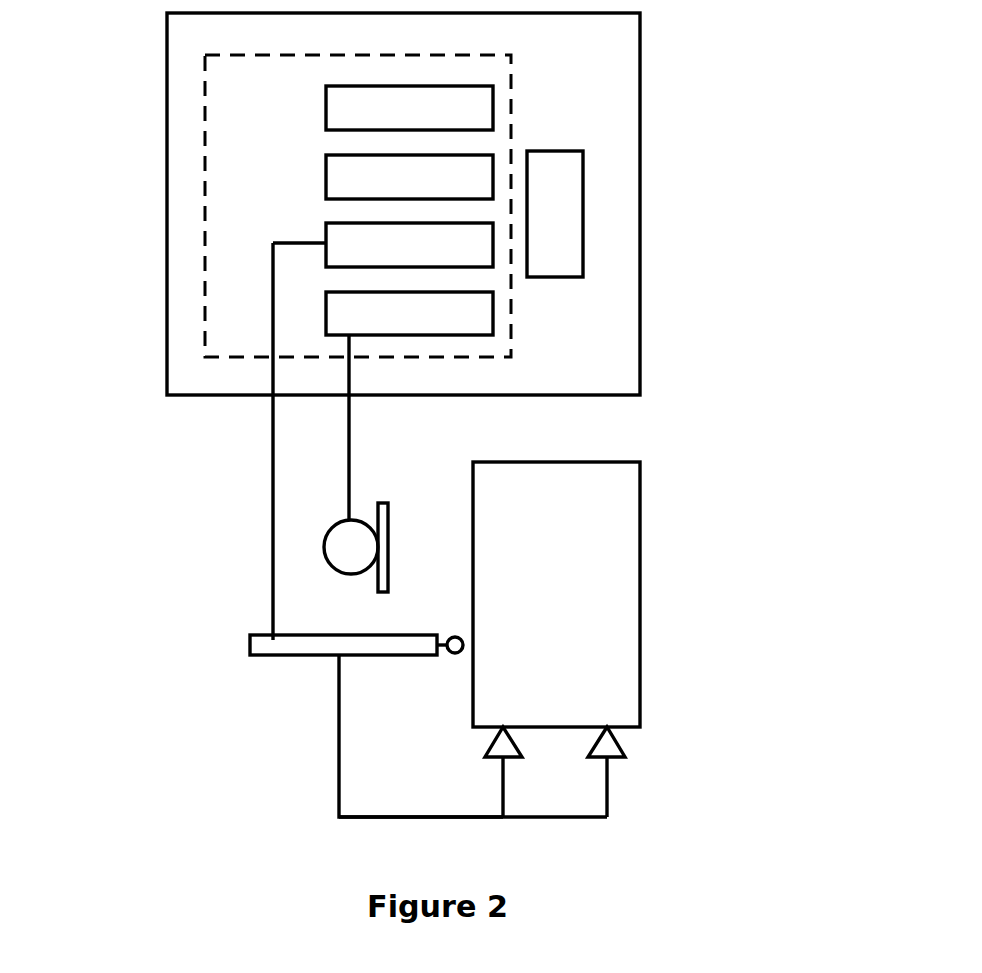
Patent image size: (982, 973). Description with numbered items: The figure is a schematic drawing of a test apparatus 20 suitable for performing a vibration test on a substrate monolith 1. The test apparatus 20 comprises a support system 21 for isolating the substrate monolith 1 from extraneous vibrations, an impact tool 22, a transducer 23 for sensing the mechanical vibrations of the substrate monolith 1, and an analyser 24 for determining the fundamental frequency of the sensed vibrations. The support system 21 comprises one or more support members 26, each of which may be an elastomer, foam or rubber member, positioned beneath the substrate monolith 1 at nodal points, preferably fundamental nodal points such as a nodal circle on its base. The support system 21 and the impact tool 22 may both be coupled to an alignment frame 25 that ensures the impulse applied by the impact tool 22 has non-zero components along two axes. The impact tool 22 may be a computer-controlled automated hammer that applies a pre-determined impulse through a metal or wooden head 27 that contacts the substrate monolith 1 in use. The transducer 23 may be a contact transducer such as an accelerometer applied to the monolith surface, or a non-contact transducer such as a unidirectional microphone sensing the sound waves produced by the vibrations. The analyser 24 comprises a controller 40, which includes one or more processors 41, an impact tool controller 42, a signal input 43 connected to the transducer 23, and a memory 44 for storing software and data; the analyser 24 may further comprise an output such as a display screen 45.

The substrate monolith 1 is at (607, 570).
The test apparatus 20 is at (192, 547).
The support system 21 is at (648, 748).
The impact tool 22 is at (325, 650).
The transducer 23 is at (353, 540).
The analyser 24 is at (641, 328).
The alignment frame 25 is at (335, 805).
The support member 26 is at (590, 752).
The head 27 is at (452, 636).
The controller 40 is at (512, 108).
The processor 41 is at (409, 177).
The impact tool controller 42 is at (383, 245).
The signal input 43 is at (409, 313).
The memory 44 is at (409, 108).
The display screen 45 is at (555, 214).